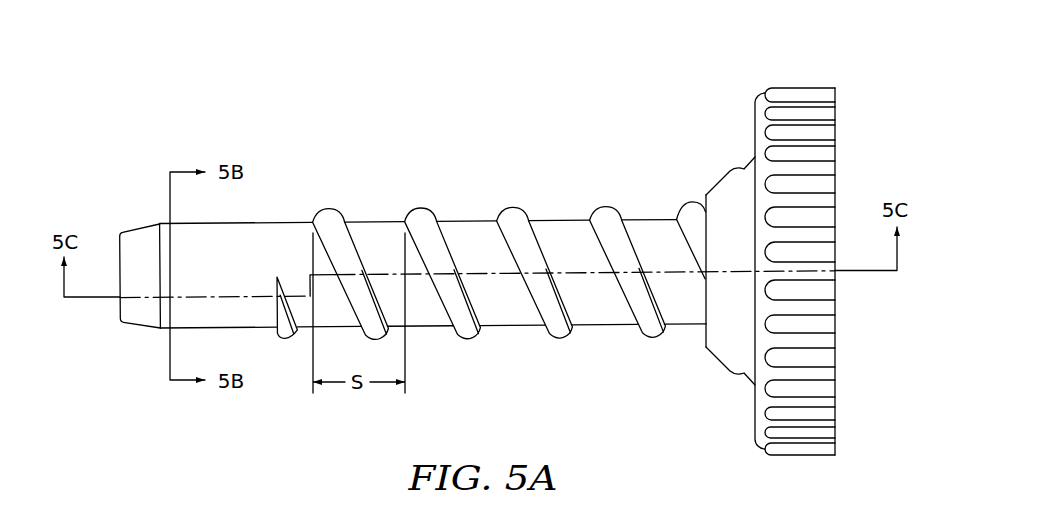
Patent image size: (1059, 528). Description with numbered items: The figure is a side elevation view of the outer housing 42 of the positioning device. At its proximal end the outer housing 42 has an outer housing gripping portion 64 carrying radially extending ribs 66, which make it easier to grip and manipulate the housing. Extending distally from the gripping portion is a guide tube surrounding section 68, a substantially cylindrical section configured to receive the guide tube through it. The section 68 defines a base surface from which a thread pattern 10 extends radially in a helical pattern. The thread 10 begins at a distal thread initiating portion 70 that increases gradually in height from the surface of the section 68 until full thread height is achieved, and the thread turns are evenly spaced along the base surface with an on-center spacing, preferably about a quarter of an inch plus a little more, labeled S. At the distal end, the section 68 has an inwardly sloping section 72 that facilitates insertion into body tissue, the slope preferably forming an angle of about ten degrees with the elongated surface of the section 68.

The thread pattern 10 is at (322, 203).
The outer housing 42 is at (412, 168).
The outer housing gripping portion 64 is at (758, 120).
The radially extending ribs 66 is at (798, 88).
The guide tube surrounding section 68 is at (463, 222).
The thread initiating portion 70 is at (277, 335).
The inwardly sloping section 72 is at (134, 227).